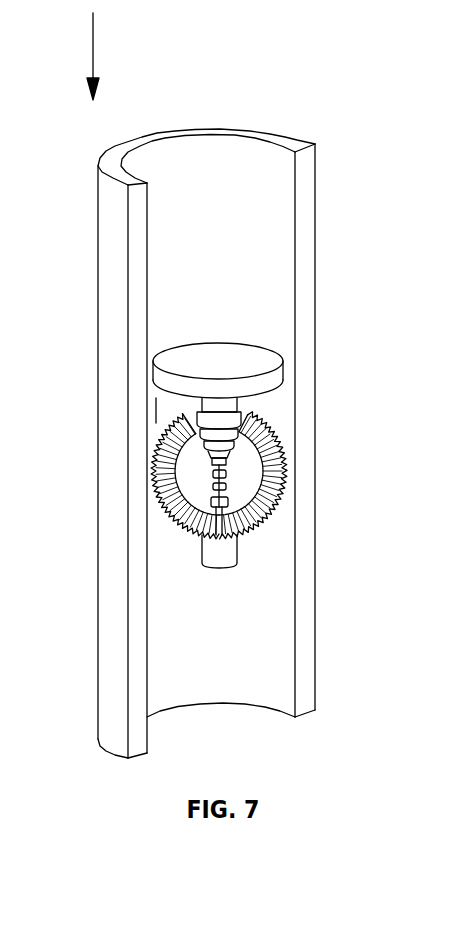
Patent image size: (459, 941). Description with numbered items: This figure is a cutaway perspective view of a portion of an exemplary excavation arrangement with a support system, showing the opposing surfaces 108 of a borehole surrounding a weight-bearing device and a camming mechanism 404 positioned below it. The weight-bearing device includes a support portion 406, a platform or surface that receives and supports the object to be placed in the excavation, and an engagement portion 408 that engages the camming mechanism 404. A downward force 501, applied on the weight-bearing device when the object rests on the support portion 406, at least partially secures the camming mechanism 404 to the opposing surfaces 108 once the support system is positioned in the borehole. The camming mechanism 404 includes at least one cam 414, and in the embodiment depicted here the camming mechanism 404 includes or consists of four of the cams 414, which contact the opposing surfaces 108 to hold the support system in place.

The downward force 501 is at (93, 50).
The opposing surfaces 108 is at (147, 692).
The support portion 406 is at (168, 355).
The engagement portion 408 is at (150, 410).
The cam 414 is at (190, 480).
The camming mechanism 404 is at (159, 512).